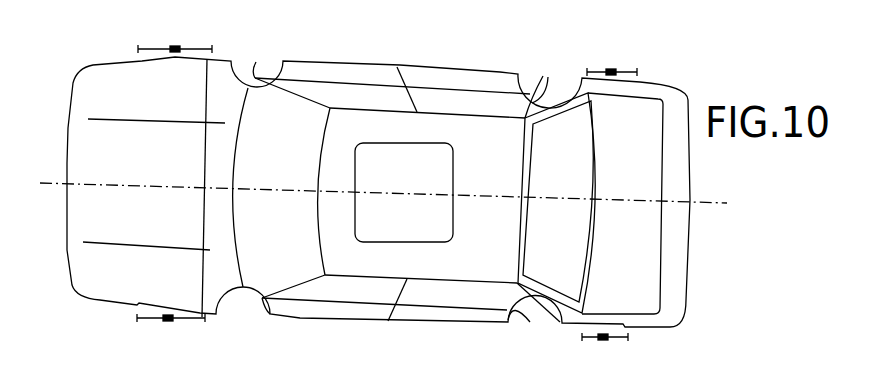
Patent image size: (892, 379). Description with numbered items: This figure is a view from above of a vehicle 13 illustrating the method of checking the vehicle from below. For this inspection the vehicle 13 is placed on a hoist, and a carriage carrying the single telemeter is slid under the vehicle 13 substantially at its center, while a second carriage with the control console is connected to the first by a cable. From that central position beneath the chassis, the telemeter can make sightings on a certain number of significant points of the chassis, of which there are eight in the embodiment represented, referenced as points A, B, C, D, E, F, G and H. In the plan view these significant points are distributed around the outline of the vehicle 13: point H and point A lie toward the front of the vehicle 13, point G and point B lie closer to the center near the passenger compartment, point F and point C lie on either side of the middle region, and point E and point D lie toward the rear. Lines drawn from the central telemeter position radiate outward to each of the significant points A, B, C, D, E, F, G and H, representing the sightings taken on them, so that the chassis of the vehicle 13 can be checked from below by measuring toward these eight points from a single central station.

The vehicle 13 is at (628, 231).
The significant point of the chassis A is at (408, 193).
The significant point of the chassis B is at (408, 193).
The significant point of the chassis C is at (408, 193).
The significant point of the chassis D is at (408, 193).
The significant point of the chassis E is at (408, 193).
The significant point of the chassis F is at (408, 193).
The significant point of the chassis G is at (385, 182).
The significant point of the chassis H is at (408, 193).